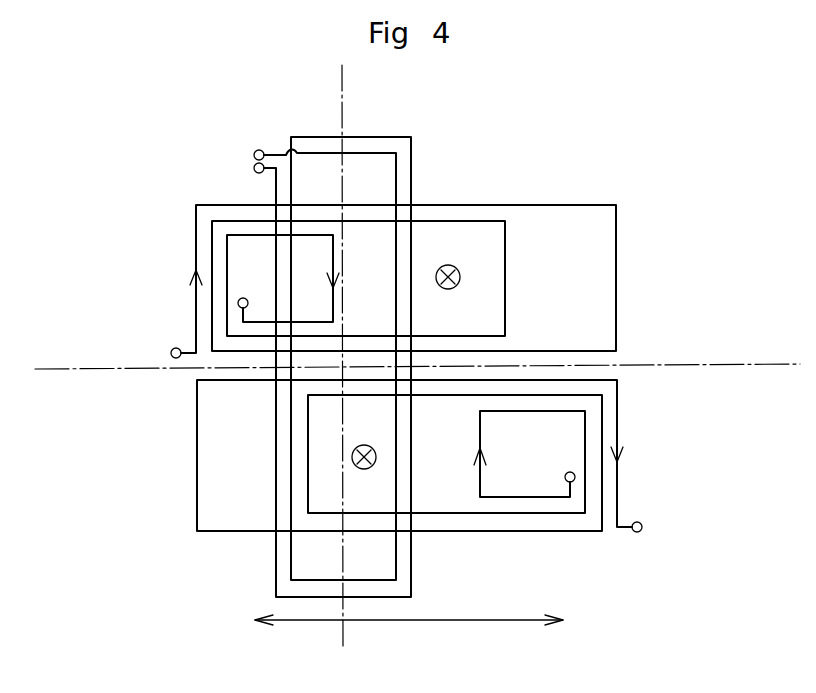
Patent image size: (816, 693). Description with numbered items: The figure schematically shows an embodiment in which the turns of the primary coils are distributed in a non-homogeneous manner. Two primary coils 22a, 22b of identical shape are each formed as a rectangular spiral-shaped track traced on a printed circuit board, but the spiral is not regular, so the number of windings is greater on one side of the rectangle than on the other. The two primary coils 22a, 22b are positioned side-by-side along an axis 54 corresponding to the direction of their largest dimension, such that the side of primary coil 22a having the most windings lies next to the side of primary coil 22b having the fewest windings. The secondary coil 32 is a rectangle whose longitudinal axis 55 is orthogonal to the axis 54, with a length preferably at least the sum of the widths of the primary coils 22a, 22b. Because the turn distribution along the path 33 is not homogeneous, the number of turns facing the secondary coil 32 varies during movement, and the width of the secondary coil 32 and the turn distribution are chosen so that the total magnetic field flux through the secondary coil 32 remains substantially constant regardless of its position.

The primary coil 22a is at (617, 415).
The primary coil 22b is at (210, 204).
The secondary coil 32 is at (408, 137).
The path 33 is at (420, 621).
The axis 54 is at (55, 369).
The longitudinal axis 55 is at (342, 104).